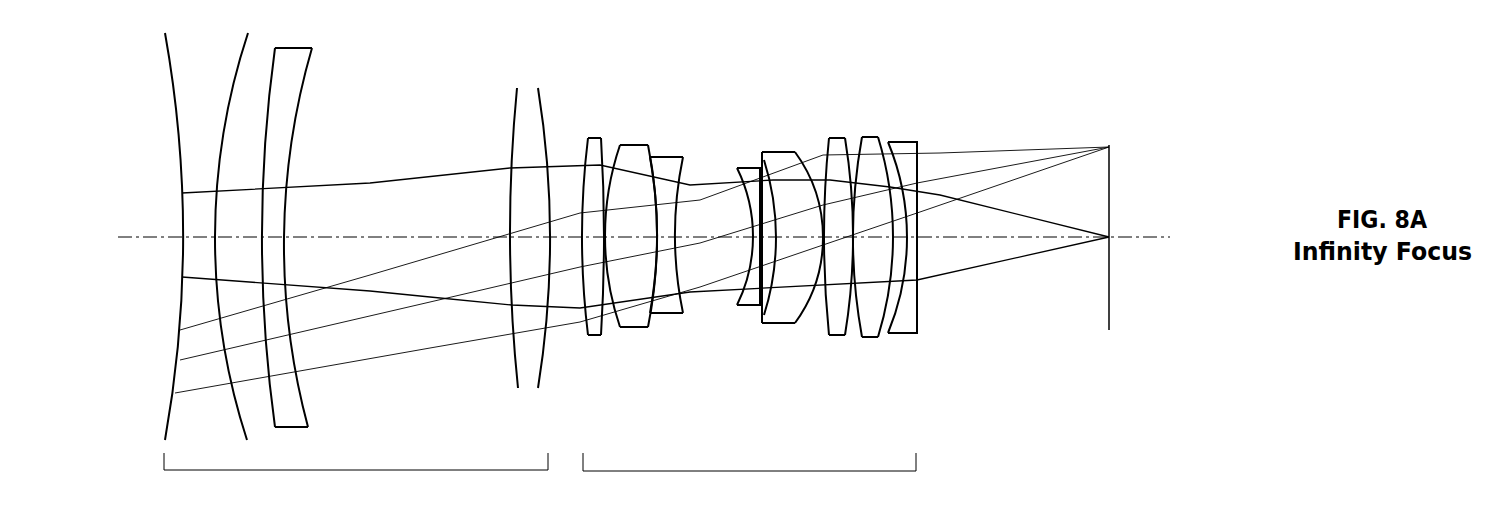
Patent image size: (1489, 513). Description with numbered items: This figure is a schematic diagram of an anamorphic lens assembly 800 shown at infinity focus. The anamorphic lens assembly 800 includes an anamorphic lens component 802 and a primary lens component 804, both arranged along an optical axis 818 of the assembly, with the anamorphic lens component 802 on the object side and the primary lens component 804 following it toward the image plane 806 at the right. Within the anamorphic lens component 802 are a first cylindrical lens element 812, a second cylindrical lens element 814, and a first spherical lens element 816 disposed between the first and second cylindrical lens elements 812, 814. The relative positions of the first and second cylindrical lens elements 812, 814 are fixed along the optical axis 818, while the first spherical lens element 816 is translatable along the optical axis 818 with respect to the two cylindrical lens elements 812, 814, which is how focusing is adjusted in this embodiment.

The anamorphic lens assembly 800 is at (1158, 107).
The anamorphic lens component 802 is at (217, 472).
The primary lens component 804 is at (740, 472).
The image plane 806 is at (1108, 307).
The first cylindrical lens element 812 is at (176, 337).
The second cylindrical lens element 814 is at (512, 355).
The first spherical lens element 816 is at (303, 377).
The optical axis 818 is at (1128, 236).